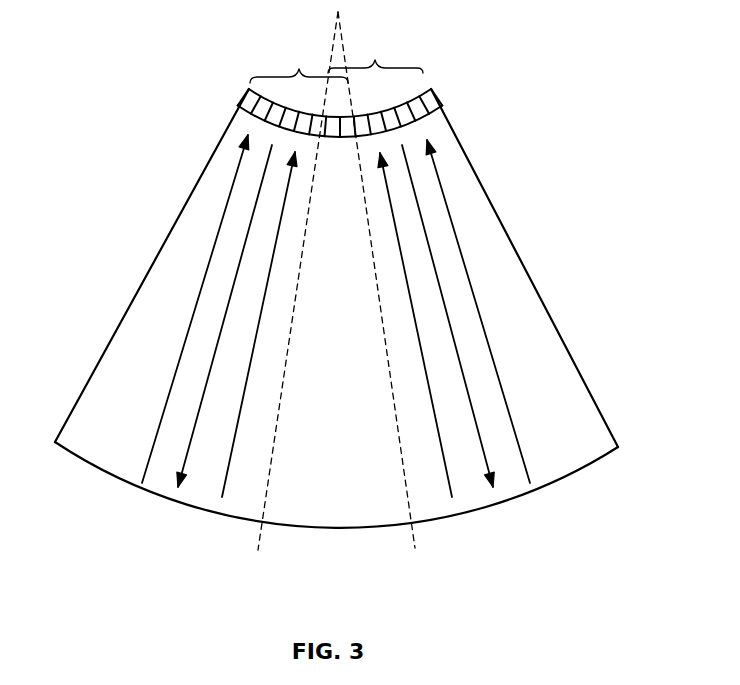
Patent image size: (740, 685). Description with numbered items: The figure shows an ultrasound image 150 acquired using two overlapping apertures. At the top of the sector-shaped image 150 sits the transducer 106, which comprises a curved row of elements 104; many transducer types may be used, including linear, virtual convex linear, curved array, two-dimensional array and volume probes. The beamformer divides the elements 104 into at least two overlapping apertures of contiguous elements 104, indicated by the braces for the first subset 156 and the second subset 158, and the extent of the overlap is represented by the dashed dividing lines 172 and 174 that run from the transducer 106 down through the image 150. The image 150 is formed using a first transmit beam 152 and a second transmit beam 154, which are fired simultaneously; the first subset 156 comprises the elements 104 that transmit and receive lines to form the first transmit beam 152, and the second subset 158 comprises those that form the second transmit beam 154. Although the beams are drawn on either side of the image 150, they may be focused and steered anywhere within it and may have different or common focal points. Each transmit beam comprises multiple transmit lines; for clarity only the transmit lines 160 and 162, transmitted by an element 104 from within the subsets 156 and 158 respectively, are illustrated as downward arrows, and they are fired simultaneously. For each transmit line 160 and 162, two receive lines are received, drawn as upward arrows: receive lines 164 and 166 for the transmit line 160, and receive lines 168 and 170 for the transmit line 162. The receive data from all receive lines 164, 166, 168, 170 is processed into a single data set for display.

The elements 104 is at (247, 101).
The transducer 106 is at (436, 92).
The image 150 is at (527, 265).
The first transmit beam 152 is at (128, 362).
The second transmit beam 154 is at (505, 362).
The first subset 156 is at (299, 69).
The second subset 158 is at (375, 60).
The transmit line 160 is at (181, 477).
The transmit line 162 is at (491, 477).
The receive line 164 is at (155, 443).
The receive line 166 is at (221, 492).
The receive line 168 is at (451, 492).
The receive line 170 is at (518, 447).
The dividing line 172 is at (400, 443).
The dividing line 174 is at (271, 463).